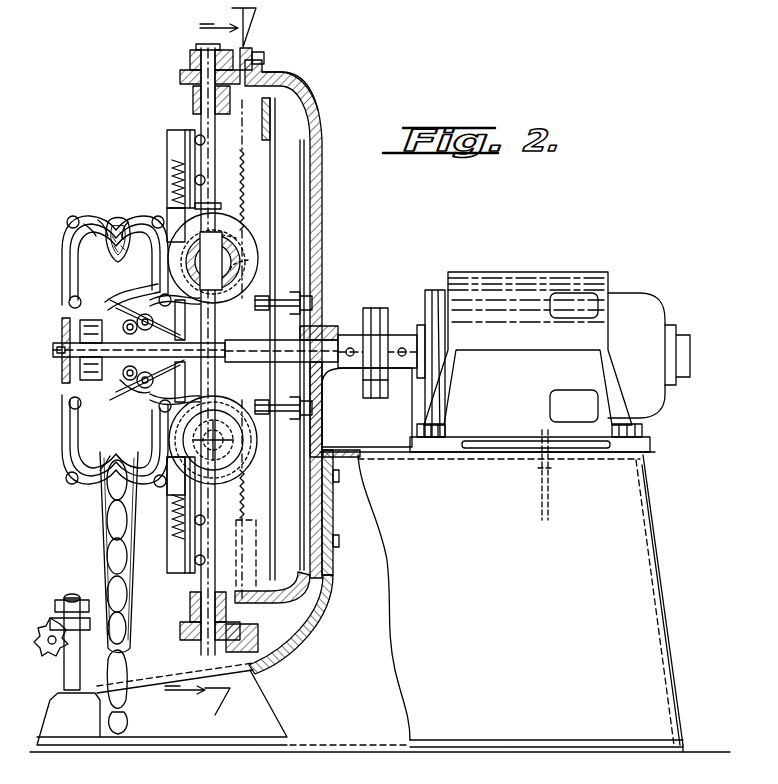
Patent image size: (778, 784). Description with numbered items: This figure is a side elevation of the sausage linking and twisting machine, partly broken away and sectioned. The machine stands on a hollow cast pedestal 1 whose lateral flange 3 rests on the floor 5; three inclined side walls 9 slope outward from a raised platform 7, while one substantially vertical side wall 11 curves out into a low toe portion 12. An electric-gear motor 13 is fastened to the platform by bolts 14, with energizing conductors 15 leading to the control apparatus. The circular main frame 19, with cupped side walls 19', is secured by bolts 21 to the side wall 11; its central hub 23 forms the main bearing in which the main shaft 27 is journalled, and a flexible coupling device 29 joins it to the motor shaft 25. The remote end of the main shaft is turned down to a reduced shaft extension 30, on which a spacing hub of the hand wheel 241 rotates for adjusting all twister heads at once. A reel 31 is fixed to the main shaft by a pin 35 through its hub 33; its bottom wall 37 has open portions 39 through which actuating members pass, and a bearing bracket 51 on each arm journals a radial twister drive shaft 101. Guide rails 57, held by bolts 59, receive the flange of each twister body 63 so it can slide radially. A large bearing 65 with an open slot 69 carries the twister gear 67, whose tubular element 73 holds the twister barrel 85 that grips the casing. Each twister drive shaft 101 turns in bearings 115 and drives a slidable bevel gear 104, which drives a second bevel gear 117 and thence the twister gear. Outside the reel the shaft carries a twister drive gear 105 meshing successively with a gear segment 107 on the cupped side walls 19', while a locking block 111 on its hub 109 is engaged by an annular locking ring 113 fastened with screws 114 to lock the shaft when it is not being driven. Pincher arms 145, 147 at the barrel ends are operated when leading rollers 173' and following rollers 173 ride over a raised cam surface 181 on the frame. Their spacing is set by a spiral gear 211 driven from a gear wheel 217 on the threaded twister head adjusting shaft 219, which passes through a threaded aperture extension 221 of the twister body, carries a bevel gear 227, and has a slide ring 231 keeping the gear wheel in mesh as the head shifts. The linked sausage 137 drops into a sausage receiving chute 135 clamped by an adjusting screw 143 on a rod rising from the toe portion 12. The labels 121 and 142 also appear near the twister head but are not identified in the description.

The pedestal 1 is at (655, 644).
The lateral flange 3 is at (682, 748).
The floor 5 is at (722, 752).
The raised platform 7 is at (400, 446).
The side walls 9 is at (650, 568).
The side wall 11 is at (334, 506).
The toe portion 12 is at (176, 690).
The electric-gear motor 13 is at (522, 272).
The bolts 14 is at (418, 425).
The energizing conductors 15 is at (556, 496).
The main frame 19 is at (301, 319).
The cupped side walls 19' is at (291, 87).
The bolts 21 is at (340, 542).
The hub 23 is at (325, 342).
The motor shaft 25 is at (416, 336).
The main shaft 27 is at (320, 350).
The flexible coupling device 29 is at (376, 308).
The shaft extension 30 is at (75, 348).
The reel 31 is at (272, 117).
The hub 33 is at (318, 380).
The pin 35 is at (270, 316).
The bottom wall 37 is at (276, 584).
The open portions 39 is at (276, 174).
The bearing bracket 51 is at (192, 98).
The guide rail 57 is at (178, 145).
The bolts 59 is at (188, 150).
The twister body 63 is at (258, 254).
The bearing 65 is at (78, 276).
The twister gear 67 is at (102, 222).
The open slot 69 is at (92, 220).
The tubular element 73 is at (117, 233).
The twister barrel 85 is at (100, 242).
The twister drive shaft 101 is at (205, 118).
The bevel gear 104 is at (225, 243).
The twister drive gear 105 is at (182, 74).
The gear segment 107 is at (242, 520).
The hub 109 is at (205, 50).
The locking block 111 is at (190, 58).
The annular locking ring 113 is at (246, 50).
The screws 114 is at (265, 56).
The bearings 115 is at (210, 204).
The second bevel gear 117 is at (242, 246).
The hook 121 is at (110, 222).
The sausage receiving chute 135 is at (100, 573).
The sausage 137 is at (124, 652).
The roller 142 is at (132, 318).
The adjusting screw 143 is at (66, 640).
The pincher arm 145 is at (70, 300).
The pincher arm 147 is at (142, 390).
The pincher operating roller 173 is at (308, 408).
The leading roller 173' is at (308, 293).
The raised cam surface 181 is at (305, 160).
The spiral gear 211 is at (152, 302).
The gear wheel 217 is at (196, 310).
The twister head adjusting shaft 219 is at (176, 178).
The threaded aperture extension 221 is at (176, 216).
The bevel gear 227 is at (190, 326).
The slide ring 231 is at (126, 392).
The hand wheel 241 is at (72, 382).